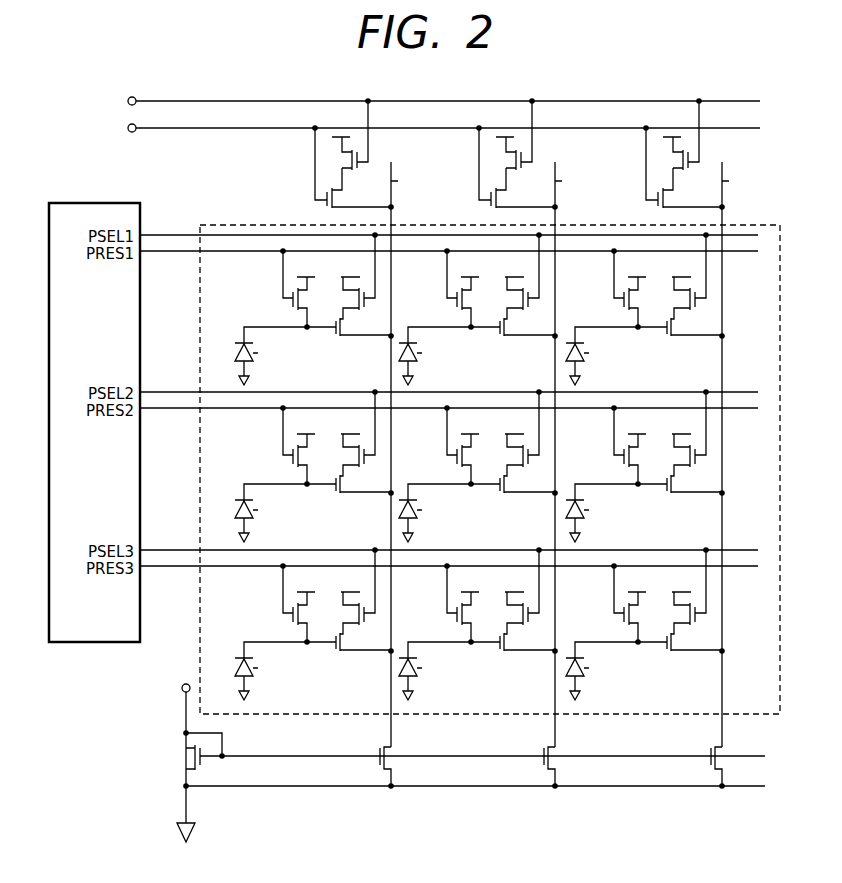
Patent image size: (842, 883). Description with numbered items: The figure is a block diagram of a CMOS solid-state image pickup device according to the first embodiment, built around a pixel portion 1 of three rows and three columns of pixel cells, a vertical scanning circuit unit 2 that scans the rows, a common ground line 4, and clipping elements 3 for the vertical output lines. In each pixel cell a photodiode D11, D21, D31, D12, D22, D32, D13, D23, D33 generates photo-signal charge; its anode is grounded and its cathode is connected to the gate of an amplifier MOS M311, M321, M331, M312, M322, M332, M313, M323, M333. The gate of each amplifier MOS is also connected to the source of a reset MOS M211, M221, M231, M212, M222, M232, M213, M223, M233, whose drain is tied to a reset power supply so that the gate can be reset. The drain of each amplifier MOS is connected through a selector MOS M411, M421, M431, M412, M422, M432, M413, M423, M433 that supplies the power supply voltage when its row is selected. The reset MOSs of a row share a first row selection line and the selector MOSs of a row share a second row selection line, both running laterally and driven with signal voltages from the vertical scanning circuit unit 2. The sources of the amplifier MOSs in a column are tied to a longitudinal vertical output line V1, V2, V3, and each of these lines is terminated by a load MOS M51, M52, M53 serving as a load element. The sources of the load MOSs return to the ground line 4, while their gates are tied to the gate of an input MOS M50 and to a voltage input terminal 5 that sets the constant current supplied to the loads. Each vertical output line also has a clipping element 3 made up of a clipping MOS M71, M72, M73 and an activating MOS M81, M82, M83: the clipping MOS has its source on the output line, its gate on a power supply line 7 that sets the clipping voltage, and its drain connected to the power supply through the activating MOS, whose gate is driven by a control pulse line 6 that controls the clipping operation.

The pixel portion 1 is at (238, 225).
The vertical scanning circuit unit 2 is at (72, 203).
The clipping element 3 is at (496, 159).
The GND line 4 is at (183, 805).
The voltage input terminal 5 is at (184, 683).
The control pulse line 6 is at (127, 101).
The power supply line 7 is at (127, 128).
The clipping MOS M71 is at (339, 173).
The clipping MOS M72 is at (503, 173).
The clipping MOS M73 is at (670, 173).
The MOS for activating clipping operation M81 is at (357, 149).
The MOS for activating clipping operation M82 is at (521, 149).
The MOS for activating clipping operation M83 is at (688, 149).
The vertical output line V1 is at (406, 454).
The vertical output line V2 is at (570, 454).
The vertical output line V3 is at (737, 454).
The reset MOS M211 is at (277, 289).
The reset MOS M221 is at (441, 289).
The reset MOS M231 is at (608, 289).
The reset MOS M212 is at (277, 446).
The reset MOS M222 is at (441, 446).
The reset MOS M232 is at (608, 446).
The reset MOS M213 is at (277, 604).
The reset MOS M223 is at (441, 604).
The reset MOS M233 is at (608, 604).
The amplifier MOS M311 is at (350, 343).
The amplifier MOS M321 is at (514, 343).
The amplifier MOS M331 is at (681, 343).
The amplifier MOS M312 is at (350, 500).
The amplifier MOS M322 is at (514, 500).
The amplifier MOS M332 is at (681, 500).
The amplifier MOS M313 is at (350, 658).
The amplifier MOS M323 is at (514, 658).
The amplifier MOS M333 is at (681, 658).
The selector MOS M411 is at (368, 284).
The selector MOS M421 is at (532, 284).
The selector MOS M431 is at (699, 284).
The selector MOS M412 is at (368, 441).
The selector MOS M422 is at (532, 441).
The selector MOS M432 is at (699, 441).
The selector MOS M413 is at (368, 599).
The selector MOS M423 is at (532, 599).
The selector MOS M433 is at (699, 599).
The photodiode D11 is at (271, 361).
The photodiode D21 is at (435, 361).
The photodiode D31 is at (602, 361).
The photodiode D12 is at (271, 518).
The photodiode D22 is at (435, 518).
The photodiode D32 is at (602, 518).
The photodiode D13 is at (271, 676).
The photodiode D23 is at (435, 676).
The photodiode D33 is at (602, 676).
The input MOS M50 is at (184, 757).
The load MOS M51 is at (394, 765).
The load MOS M52 is at (558, 765).
The load MOS M53 is at (725, 765).